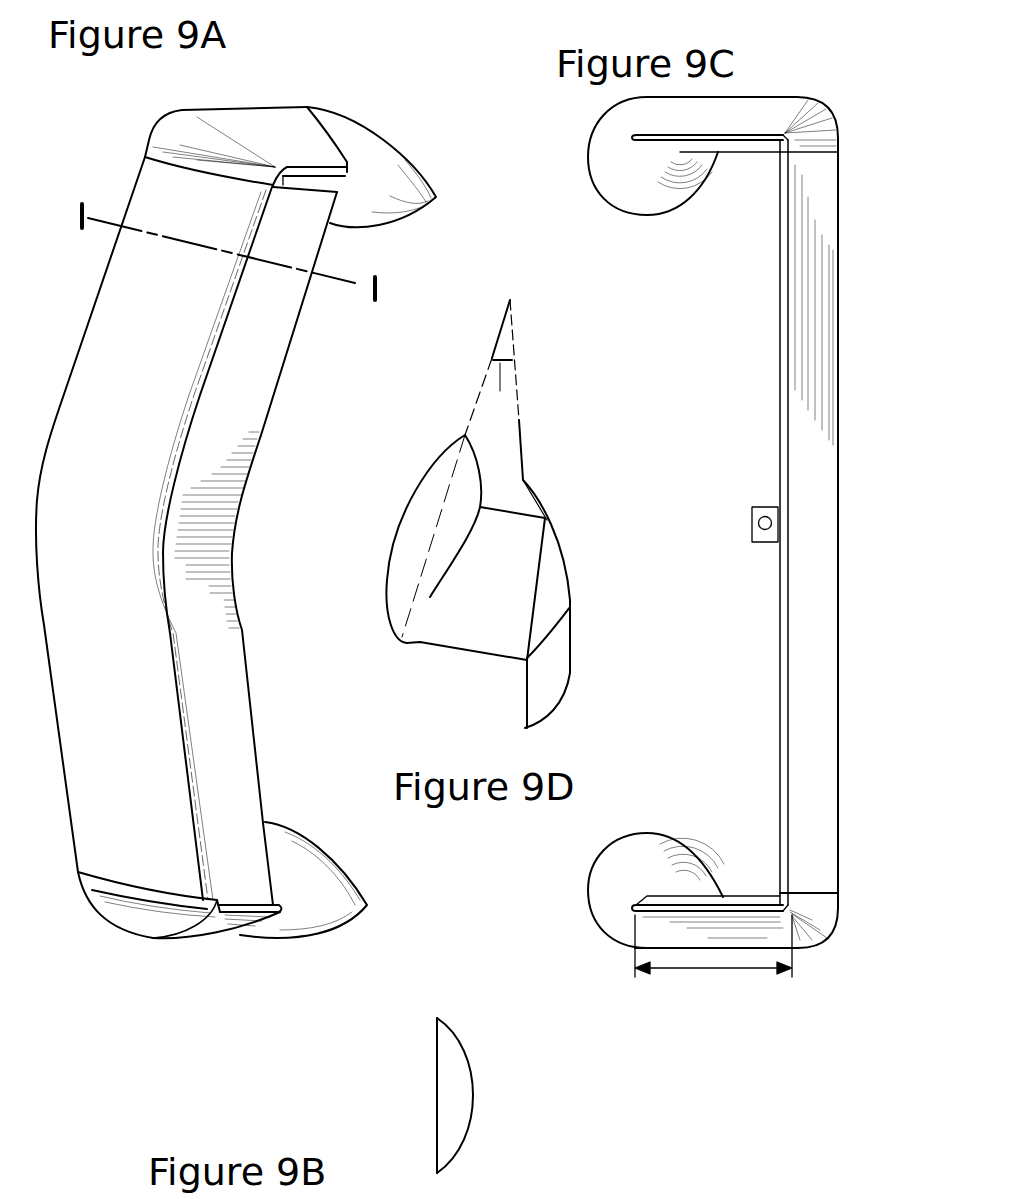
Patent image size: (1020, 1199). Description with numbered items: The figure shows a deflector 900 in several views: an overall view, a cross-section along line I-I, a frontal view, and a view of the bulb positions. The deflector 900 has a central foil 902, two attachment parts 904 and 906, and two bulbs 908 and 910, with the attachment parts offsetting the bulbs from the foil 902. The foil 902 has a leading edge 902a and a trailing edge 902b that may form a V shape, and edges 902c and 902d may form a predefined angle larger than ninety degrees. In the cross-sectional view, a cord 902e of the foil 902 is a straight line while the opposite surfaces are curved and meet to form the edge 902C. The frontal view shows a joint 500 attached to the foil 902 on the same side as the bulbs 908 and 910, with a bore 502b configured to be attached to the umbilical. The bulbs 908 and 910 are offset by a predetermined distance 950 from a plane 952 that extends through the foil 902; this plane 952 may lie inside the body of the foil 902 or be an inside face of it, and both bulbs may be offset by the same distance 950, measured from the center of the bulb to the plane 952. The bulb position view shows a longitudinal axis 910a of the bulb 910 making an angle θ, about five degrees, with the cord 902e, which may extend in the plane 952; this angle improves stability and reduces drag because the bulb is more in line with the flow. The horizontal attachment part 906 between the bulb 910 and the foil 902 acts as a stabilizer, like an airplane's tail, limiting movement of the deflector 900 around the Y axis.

In FIG. 9A, the deflector 900 is at (261, 88).
In FIG. 9A, the central foil 902 is at (186, 531).
In FIG. 9C, the central foil 902 is at (808, 558).
In FIG. 9B, the central foil 902 is at (469, 1085).
In FIG. 9A, the leading edge 902a is at (99, 345).
In FIG. 9D, the leading edge 902a is at (515, 377).
In FIG. 9B, the leading edge 902a is at (423, 1179).
In FIG. 9A, the trailing edge 902b is at (277, 373).
In FIG. 9B, the trailing edge 902b is at (437, 1020).
In FIG. 9A, the edge 902c is at (217, 355).
In FIG. 9B, the edge 902C is at (468, 1143).
In FIG. 9A, the edge 902d is at (173, 660).
In FIG. 9B, the cord 902e is at (437, 1072).
In FIG. 9A, the attachment part 904 is at (218, 925).
In FIG. 9C, the attachment part 904 is at (730, 935).
In FIG. 9A, the horizontal attachment part 906 is at (296, 141).
In FIG. 9D, the horizontal attachment part 906 is at (516, 577).
In FIG. 9C, the horizontal attachment part 906 is at (733, 126).
In FIG. 9A, the bulb 908 is at (333, 895).
In FIG. 9C, the bulb 908 is at (641, 889).
In FIG. 9A, the bulb 910 is at (396, 181).
In FIG. 9D, the bulb 910 is at (459, 552).
In FIG. 9C, the bulb 910 is at (656, 195).
In FIG. 9D, the longitudinal axis of bulb 910a is at (493, 358).
In FIG. 9C, the predetermined distance 950 is at (677, 970).
In FIG. 9C, the plane 952 is at (783, 307).
In FIG. 9C, the joint 500 is at (763, 542).
In FIG. 9C, the bore 502b is at (765, 516).